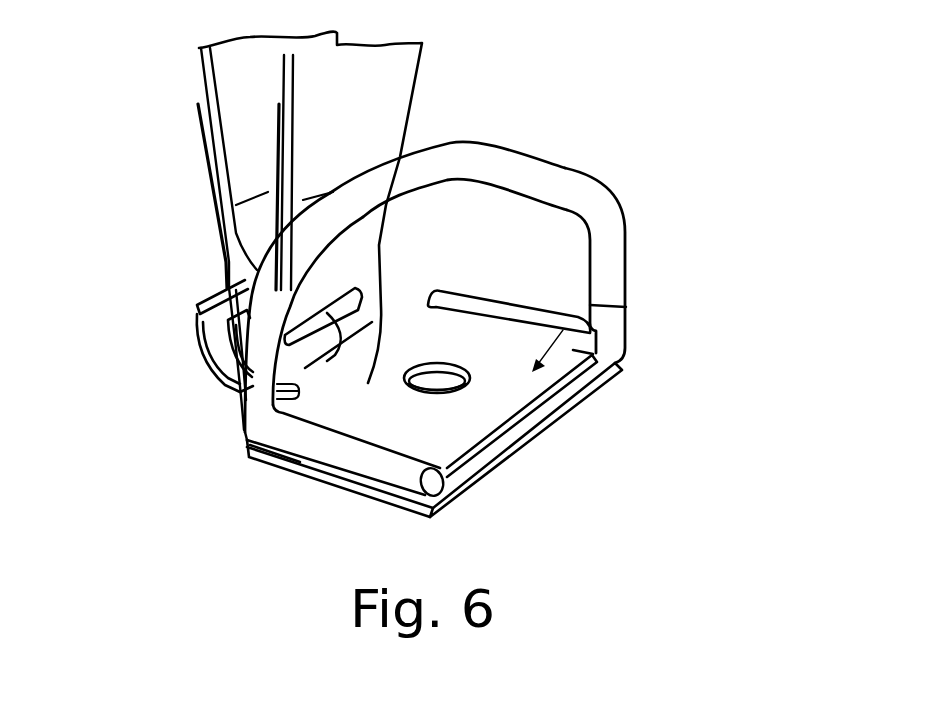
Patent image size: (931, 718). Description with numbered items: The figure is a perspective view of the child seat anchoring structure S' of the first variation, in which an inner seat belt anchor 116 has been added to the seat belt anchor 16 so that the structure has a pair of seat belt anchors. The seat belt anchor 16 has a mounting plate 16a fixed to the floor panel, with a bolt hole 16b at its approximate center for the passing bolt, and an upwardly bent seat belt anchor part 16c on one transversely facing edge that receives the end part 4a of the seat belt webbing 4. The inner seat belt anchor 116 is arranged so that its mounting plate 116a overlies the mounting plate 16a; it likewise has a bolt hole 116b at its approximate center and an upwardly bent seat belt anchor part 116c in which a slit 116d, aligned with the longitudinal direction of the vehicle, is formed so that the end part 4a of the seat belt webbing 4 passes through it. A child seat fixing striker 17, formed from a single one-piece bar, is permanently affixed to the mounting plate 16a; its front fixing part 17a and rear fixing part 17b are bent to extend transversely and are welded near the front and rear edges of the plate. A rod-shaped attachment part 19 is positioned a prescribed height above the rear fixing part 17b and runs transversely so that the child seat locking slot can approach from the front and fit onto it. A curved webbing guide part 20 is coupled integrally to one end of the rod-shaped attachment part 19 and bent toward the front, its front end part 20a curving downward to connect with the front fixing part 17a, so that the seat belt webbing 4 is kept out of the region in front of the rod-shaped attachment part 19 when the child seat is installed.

The seat belt webbing 4 is at (282, 140).
The end part of the seat belt webbing 4a is at (247, 266).
The seat belt anchor 16 is at (481, 479).
The mounting plate 16a is at (537, 435).
The bolt hole 16b is at (422, 377).
The seat belt anchor part 16c is at (227, 343).
The child seat fixing striker 17 is at (625, 264).
The front fixing part 17a is at (377, 469).
The rear fixing part 17b is at (513, 310).
The rod-shaped attachment part 19 is at (538, 172).
The webbing guide part 20 is at (384, 160).
The front end part of the webbing guide part 20a is at (245, 400).
The inner seat belt anchor 116 is at (590, 305).
The mounting plate 116a is at (510, 400).
The bolt hole 116b is at (450, 362).
The seat belt anchor part 116c is at (222, 368).
The slit 116d is at (340, 390).
The child seat anchoring structure S' is at (734, 193).